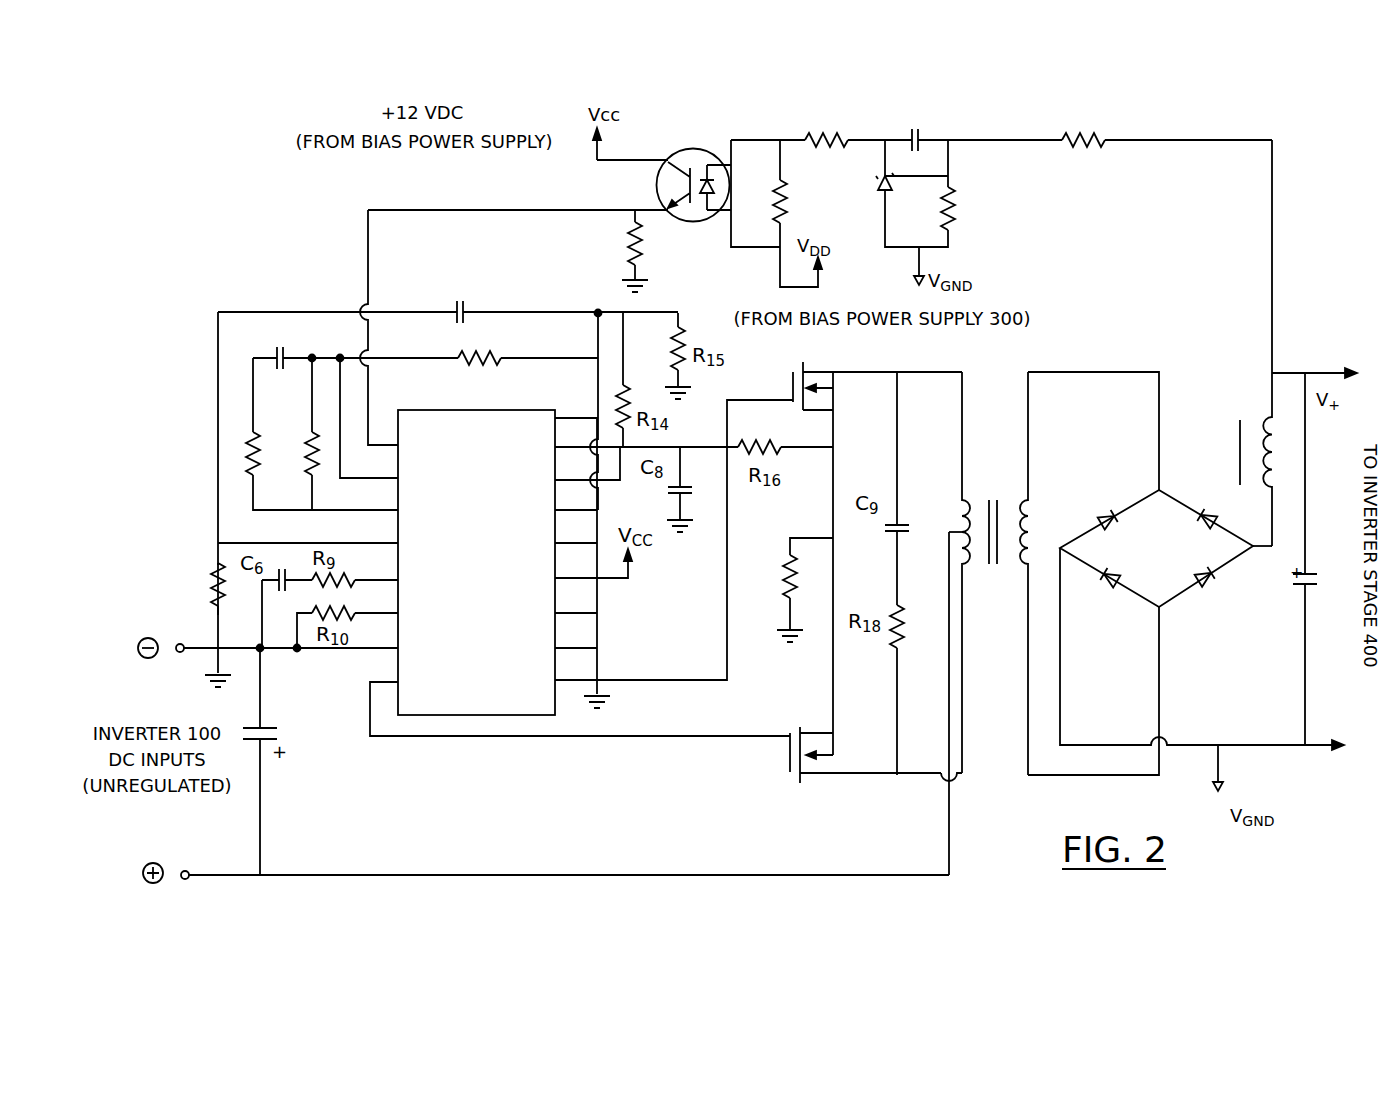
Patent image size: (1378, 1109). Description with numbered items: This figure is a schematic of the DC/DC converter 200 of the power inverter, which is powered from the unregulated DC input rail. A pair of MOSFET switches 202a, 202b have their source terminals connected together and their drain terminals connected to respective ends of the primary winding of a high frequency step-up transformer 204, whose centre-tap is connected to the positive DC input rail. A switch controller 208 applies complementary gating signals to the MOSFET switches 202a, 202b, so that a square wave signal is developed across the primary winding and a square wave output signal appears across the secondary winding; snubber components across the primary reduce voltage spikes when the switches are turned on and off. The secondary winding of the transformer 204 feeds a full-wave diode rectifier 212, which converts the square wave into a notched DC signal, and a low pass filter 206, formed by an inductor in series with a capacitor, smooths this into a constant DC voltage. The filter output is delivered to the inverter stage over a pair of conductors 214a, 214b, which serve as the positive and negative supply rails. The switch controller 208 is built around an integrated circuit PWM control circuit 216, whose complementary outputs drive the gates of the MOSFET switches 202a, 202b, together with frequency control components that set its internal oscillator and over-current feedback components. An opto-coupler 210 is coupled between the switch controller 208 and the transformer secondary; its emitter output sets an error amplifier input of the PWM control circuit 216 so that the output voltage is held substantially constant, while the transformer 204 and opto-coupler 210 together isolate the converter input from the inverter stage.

The DC/DC converter 200 is at (329, 917).
The MOSFET switch 202a is at (788, 384).
The MOSFET switch 202b is at (788, 758).
The high frequency step-up transformer 204 is at (981, 667).
The low pass filter 206 is at (1220, 680).
The switch controller 208 is at (490, 602).
The opto-coupler 210 is at (697, 148).
The full-wave diode rectifier 212 is at (1141, 561).
The conductor 214a is at (1292, 372).
The conductor 214b is at (1278, 746).
The integrated circuit PWM control circuit 216 is at (490, 562).